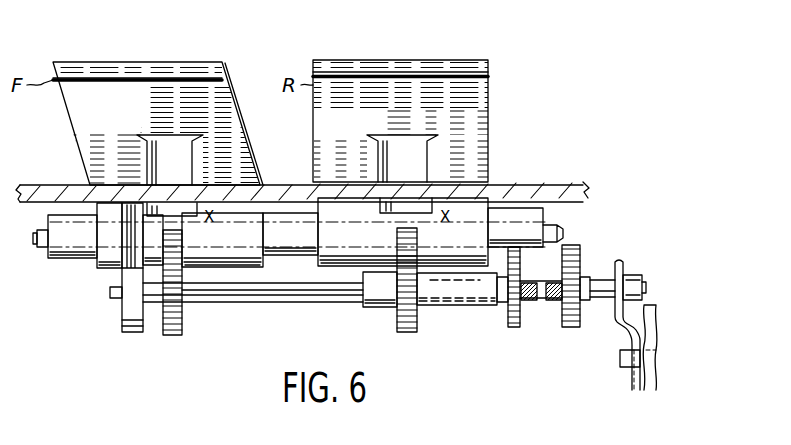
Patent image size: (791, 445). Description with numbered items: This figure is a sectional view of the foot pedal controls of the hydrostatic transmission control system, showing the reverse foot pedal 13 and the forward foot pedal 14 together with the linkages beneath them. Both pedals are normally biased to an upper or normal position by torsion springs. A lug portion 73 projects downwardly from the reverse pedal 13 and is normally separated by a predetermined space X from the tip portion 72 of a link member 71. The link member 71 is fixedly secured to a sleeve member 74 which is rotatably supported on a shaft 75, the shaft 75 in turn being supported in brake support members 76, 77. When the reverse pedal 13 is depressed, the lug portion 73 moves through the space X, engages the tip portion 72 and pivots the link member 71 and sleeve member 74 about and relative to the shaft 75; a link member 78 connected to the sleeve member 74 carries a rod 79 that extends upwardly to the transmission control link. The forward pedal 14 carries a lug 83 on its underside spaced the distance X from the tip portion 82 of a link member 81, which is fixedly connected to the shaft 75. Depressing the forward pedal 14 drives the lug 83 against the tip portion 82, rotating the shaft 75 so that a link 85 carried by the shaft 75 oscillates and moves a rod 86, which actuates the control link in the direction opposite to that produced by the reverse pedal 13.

The reverse foot pedal 13 is at (402, 60).
The forward foot pedal 14 is at (137, 62).
The link member 71 is at (397, 320).
The tip portion 72 is at (396, 228).
The lug portion 73 is at (390, 205).
The sleeve member 74 is at (450, 304).
The shaft 75 is at (262, 302).
The brake support member 76 is at (122, 318).
The brake support member 77 is at (633, 340).
The link member 78 is at (512, 327).
The rod 79 is at (528, 283).
The link member 81 is at (182, 322).
The tip portion 82 is at (173, 226).
The lug 83 is at (170, 206).
The link 85 is at (580, 253).
The rod 86 is at (556, 299).